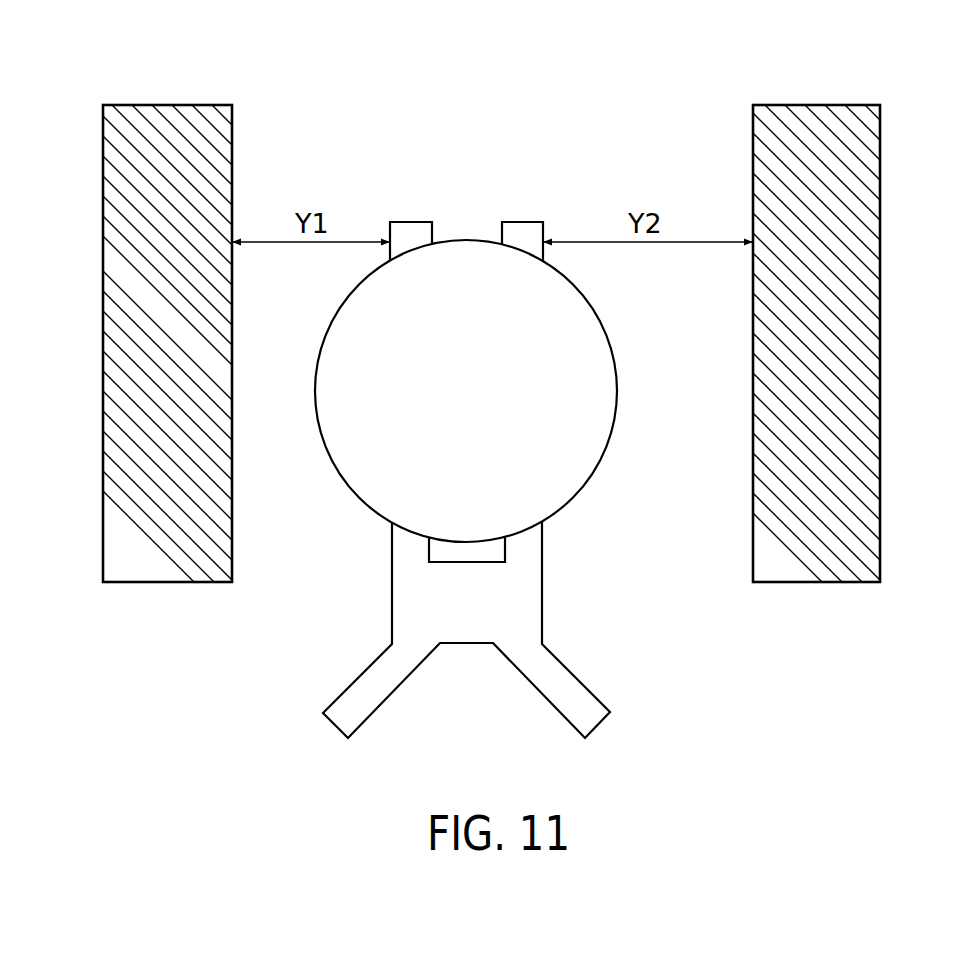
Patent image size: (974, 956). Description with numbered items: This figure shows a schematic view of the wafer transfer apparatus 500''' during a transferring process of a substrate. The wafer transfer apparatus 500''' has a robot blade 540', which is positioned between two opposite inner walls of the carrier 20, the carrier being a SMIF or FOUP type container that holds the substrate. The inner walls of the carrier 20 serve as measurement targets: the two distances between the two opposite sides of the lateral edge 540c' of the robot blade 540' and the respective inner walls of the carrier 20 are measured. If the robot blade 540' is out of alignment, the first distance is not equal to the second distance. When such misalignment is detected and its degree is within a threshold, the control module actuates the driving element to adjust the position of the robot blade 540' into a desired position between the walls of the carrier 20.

The carrier 20 is at (880, 342).
The wafer transfer apparatus 500''' is at (466, 295).
The robot blade 540' is at (513, 630).
The lateral edge 540c' is at (542, 556).